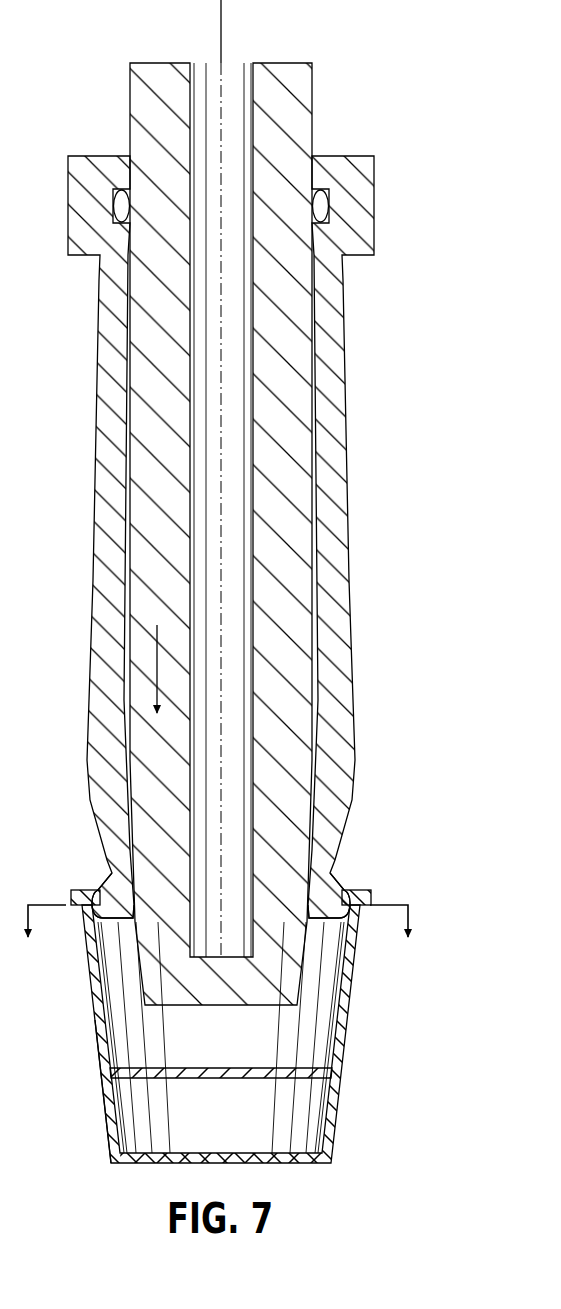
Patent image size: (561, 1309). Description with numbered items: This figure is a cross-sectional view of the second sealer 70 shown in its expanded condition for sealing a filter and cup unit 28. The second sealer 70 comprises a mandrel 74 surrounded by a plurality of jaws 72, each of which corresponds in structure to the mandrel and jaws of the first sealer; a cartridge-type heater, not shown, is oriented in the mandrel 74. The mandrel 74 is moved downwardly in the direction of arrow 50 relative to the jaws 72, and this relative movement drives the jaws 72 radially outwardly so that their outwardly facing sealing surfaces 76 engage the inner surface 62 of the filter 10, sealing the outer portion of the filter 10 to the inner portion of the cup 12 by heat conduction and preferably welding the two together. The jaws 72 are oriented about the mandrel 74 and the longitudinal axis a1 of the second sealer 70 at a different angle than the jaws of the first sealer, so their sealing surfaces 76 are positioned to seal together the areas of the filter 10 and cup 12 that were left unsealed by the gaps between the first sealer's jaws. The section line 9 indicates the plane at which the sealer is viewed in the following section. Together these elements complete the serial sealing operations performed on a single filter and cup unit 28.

The second sealer 70 is at (46, 67).
The longitudinal axis a1 is at (221, 22).
The mandrel 74 is at (130, 87).
The jaws 72 is at (92, 552).
The sealing surfaces 76 is at (82, 890).
The arrow 50 is at (157, 658).
The cup 12 is at (349, 1031).
The filter and cup unit 28 is at (84, 1079).
The inner surface 62 is at (100, 963).
The filter 10 is at (274, 1083).
The section line 9- 9 is at (219, 901).